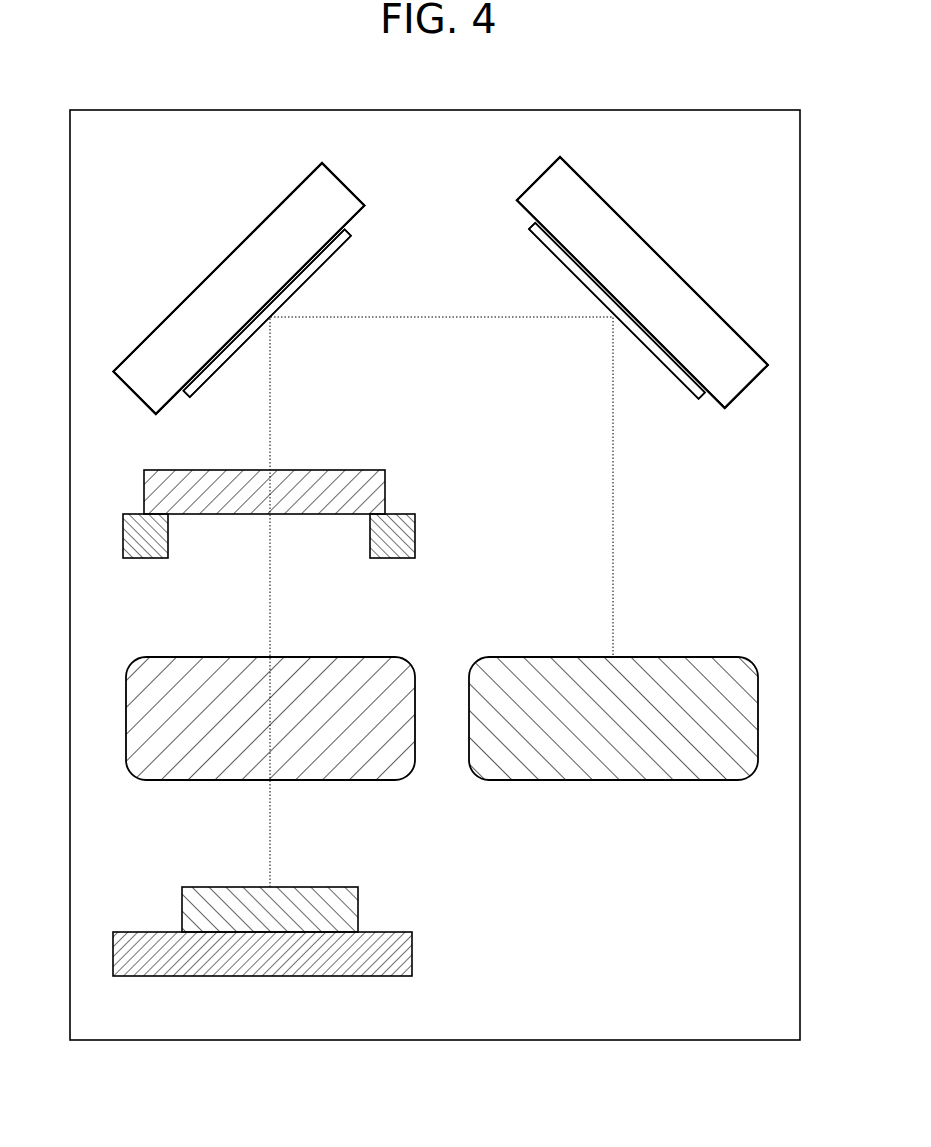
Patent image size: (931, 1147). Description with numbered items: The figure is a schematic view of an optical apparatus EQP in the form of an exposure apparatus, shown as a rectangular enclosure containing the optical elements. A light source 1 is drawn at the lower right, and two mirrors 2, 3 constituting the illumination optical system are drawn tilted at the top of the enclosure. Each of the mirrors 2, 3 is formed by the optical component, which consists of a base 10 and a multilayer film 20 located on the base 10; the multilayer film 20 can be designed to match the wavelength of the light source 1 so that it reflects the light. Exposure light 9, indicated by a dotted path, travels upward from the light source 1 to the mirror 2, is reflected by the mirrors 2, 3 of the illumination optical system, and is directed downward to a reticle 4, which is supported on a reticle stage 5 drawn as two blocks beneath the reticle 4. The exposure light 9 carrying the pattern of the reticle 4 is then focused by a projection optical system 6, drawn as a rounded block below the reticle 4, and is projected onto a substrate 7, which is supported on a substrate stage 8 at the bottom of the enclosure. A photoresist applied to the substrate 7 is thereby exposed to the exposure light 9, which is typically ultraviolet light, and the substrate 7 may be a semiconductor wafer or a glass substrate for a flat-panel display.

The light source 1 is at (617, 780).
The mirror 2 is at (662, 256).
The mirror 3 is at (228, 256).
The reticle 4 is at (387, 490).
The reticle stage 5 is at (417, 538).
The projection optical system 6 is at (178, 780).
The substrate 7 is at (360, 905).
The substrate stage 8 is at (412, 955).
The exposure light 9 is at (615, 513).
The base 10 is at (336, 190).
The multilayer film 20 is at (336, 257).
The optical apparatus EQP is at (327, 1042).